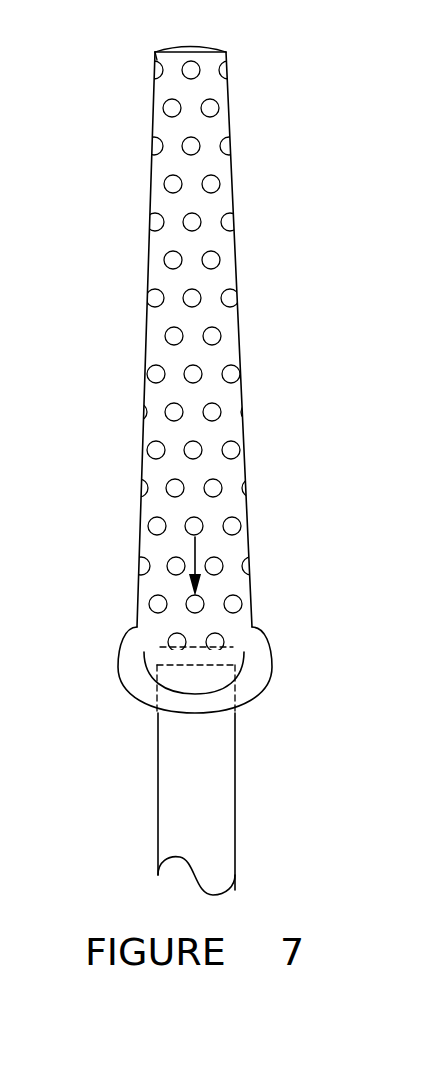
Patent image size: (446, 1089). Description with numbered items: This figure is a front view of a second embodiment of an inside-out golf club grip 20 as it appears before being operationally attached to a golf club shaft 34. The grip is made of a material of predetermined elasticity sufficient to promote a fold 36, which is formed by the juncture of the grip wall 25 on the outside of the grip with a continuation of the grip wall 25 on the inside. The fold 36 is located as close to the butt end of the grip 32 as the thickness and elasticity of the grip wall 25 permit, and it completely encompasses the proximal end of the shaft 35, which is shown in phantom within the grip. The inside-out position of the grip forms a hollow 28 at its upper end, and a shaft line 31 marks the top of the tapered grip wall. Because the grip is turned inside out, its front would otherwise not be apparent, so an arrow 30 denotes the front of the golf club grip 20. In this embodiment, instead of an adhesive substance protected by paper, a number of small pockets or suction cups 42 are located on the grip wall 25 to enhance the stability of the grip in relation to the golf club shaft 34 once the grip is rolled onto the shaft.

The golf club grip 20 is at (283, 344).
The grip wall 25 is at (215, 242).
The hollow 28 is at (177, 46).
The top edge 31 is at (156, 53).
The suction cups 42 is at (190, 220).
The arrow 30 is at (193, 552).
The butt end of the grip 32 is at (166, 650).
The proximal end of the shaft 35 is at (210, 663).
The fold 36 is at (192, 703).
The golf club shaft 34 is at (235, 725).